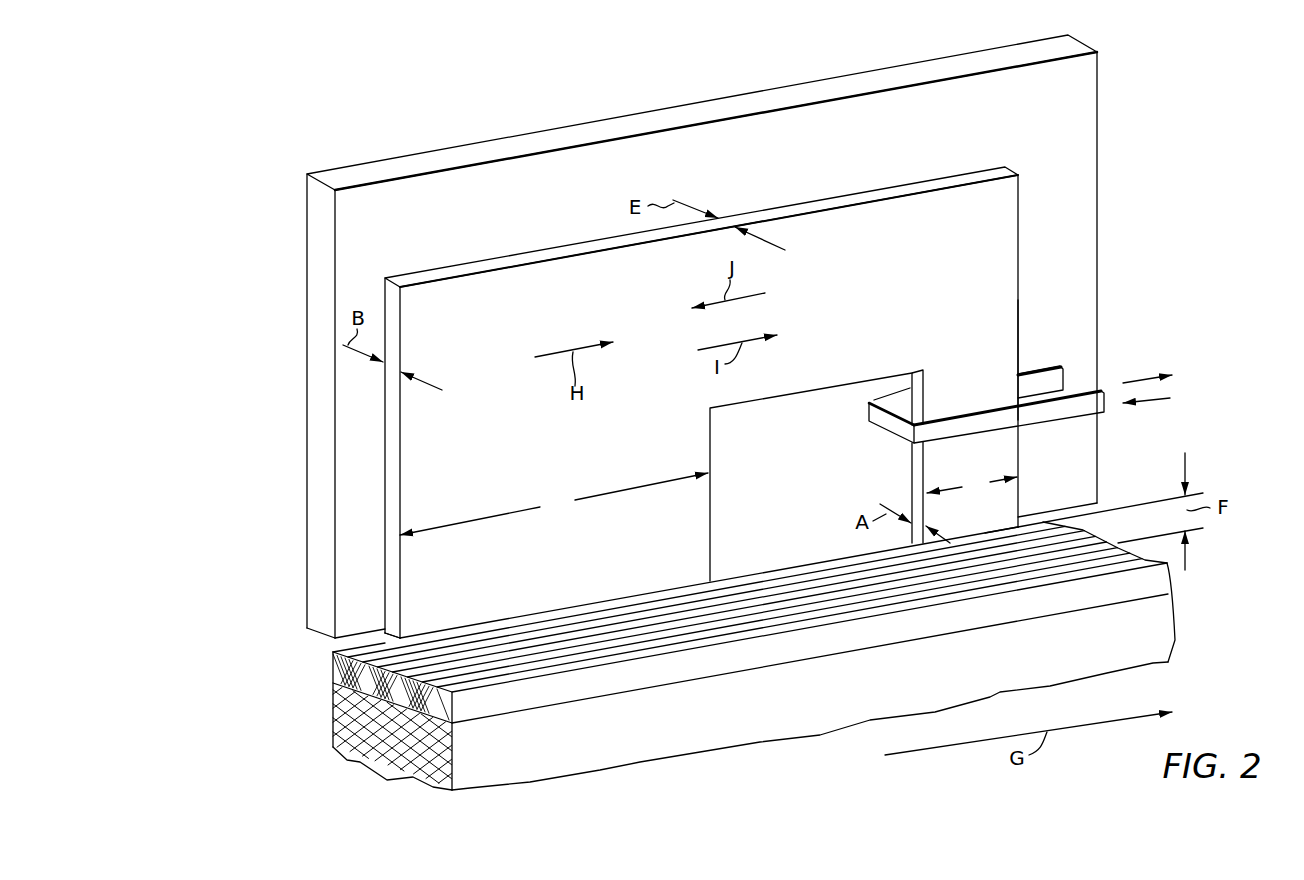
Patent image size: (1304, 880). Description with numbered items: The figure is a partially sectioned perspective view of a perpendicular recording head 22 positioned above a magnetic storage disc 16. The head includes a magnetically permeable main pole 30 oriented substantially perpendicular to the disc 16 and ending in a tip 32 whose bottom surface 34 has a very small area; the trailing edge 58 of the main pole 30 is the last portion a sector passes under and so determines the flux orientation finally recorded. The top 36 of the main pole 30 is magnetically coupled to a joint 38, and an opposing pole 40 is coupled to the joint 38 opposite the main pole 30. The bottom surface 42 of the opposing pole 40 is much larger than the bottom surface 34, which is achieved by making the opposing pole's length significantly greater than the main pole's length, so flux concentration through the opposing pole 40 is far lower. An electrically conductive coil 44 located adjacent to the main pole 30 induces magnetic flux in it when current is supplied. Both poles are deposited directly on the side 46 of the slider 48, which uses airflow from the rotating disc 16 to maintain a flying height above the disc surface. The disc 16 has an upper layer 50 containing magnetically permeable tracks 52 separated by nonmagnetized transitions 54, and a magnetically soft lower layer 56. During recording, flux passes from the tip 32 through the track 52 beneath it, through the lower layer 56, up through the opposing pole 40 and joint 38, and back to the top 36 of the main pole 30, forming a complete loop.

The magnetic storage disc 16 is at (1195, 613).
The perpendicular recording head 22 is at (1133, 245).
The main pole 30 is at (964, 466).
The tip 32 is at (984, 520).
The bottom surface 34 is at (913, 528).
The top 36 is at (959, 371).
The joint 38 is at (811, 321).
The opposing pole 40 is at (532, 461).
The bottom surface 42 is at (392, 632).
The electrically conductive coil 44 is at (1040, 380).
The side 46 is at (726, 168).
The slider 48 is at (1132, 118).
The upper layer 50 is at (300, 660).
The magnetically permeable tracks 52 is at (334, 666).
The nonmagnetized transitions 54 is at (336, 700).
The lower layer 56 is at (494, 756).
The trailing edge 58 is at (1018, 527).